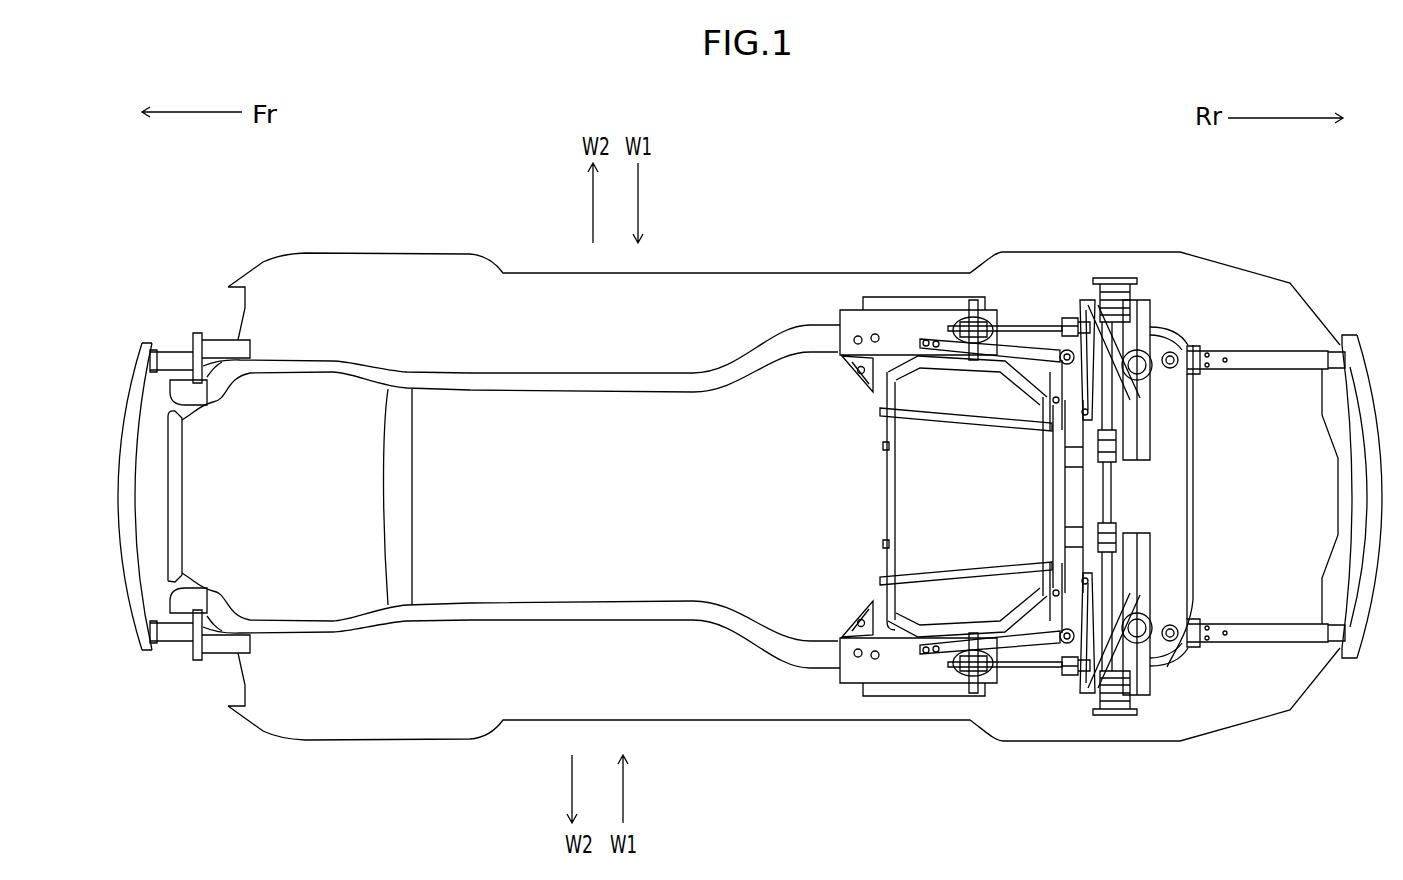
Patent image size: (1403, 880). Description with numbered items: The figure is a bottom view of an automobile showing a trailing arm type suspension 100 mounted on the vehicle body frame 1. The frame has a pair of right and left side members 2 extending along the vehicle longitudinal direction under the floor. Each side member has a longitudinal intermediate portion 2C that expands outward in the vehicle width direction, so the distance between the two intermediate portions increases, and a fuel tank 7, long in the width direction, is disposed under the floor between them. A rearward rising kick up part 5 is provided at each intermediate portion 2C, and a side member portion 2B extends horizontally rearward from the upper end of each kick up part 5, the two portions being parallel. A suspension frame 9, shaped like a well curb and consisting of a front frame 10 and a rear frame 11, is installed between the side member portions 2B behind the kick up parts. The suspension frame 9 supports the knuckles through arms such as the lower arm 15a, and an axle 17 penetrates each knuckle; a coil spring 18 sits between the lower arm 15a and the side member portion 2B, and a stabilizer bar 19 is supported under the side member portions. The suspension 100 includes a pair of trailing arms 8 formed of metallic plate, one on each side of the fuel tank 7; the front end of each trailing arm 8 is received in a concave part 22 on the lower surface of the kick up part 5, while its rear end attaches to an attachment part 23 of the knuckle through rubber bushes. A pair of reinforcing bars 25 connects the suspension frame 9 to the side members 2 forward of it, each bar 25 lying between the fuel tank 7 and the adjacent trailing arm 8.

The vehicle body frame 1 is at (712, 341).
The side member 2 is at (1074, 496).
The side member portion 2B is at (1248, 358).
The longitudinal intermediate portion 2C is at (858, 318).
The kick up part 5 is at (901, 293).
The fuel tank 7 is at (903, 454).
The trailing arm 8 is at (1045, 328).
The suspension frame 9 is at (1110, 497).
The front frame 10 is at (1075, 502).
The rear frame 11 is at (1163, 413).
The lower arm 15a is at (1152, 382).
The axle 17 is at (1150, 392).
The coil spring 18 is at (1140, 387).
The stabilizer bar 19 is at (1193, 497).
The concave part 22 is at (957, 333).
The attachment part 23 is at (1070, 291).
The reinforcing bar 25 is at (1002, 340).
The trailing arm type suspension 100 is at (1149, 272).